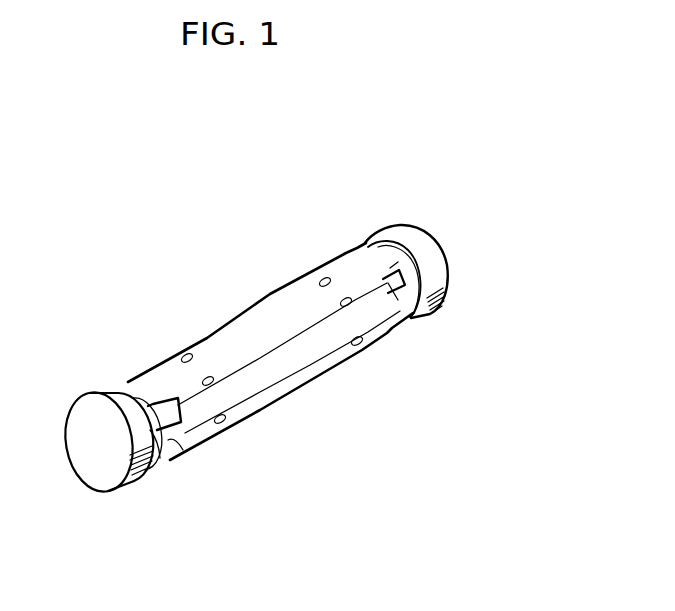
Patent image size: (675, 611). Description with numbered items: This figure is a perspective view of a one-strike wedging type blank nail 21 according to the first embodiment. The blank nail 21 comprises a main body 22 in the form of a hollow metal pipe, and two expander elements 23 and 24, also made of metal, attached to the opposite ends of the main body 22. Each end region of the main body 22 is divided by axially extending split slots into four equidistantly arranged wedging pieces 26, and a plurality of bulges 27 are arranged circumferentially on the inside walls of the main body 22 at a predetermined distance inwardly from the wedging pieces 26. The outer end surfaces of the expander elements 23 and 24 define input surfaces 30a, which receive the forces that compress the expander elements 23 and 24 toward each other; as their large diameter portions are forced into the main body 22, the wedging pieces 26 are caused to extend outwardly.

The one-strike wedging type blank nail 21 is at (195, 219).
The main body 22 is at (271, 298).
The expander element 23 is at (92, 394).
The expander element 24 is at (399, 233).
The wedging pieces 26 is at (174, 446).
The bulges 27 is at (190, 362).
The input surfaces 30a is at (449, 278).